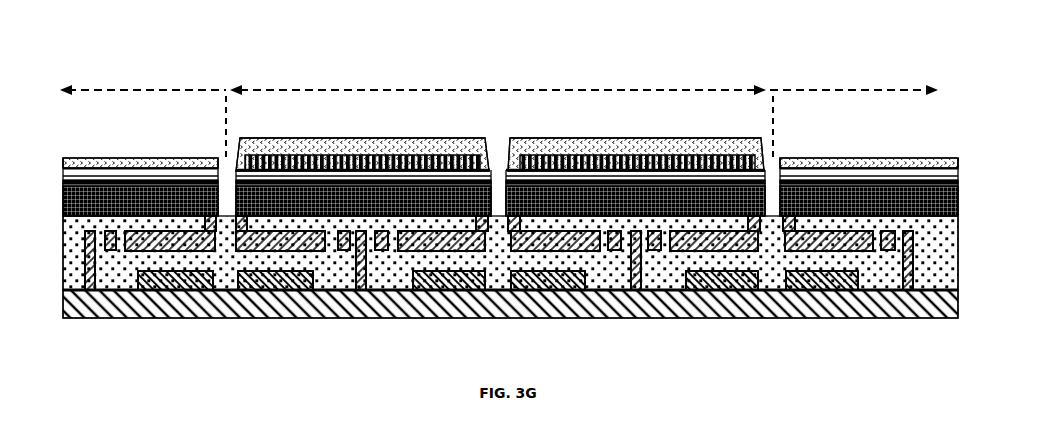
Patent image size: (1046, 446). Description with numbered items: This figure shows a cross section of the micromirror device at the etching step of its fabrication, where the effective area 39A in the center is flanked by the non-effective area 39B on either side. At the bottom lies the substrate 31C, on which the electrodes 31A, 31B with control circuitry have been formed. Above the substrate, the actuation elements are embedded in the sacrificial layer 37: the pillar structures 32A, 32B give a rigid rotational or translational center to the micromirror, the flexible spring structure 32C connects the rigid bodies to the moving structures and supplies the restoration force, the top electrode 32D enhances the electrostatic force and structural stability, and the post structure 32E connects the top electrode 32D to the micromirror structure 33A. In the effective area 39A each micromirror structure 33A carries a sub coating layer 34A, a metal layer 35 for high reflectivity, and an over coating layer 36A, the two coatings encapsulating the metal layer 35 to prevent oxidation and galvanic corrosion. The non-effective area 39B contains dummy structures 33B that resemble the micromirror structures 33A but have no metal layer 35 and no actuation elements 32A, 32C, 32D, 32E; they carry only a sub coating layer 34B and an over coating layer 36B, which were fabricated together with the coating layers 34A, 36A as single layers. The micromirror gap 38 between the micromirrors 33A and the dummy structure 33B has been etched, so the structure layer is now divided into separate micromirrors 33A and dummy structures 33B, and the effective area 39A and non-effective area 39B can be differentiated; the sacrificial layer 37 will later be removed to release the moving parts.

The electrode 31A is at (772, 302).
The electrode 31B is at (710, 270).
The substrate 31C is at (147, 275).
The pillar structure 32A is at (627, 275).
The pillar structure 32B is at (905, 273).
The flexible spring structure 32C is at (380, 245).
The top electrode 32D is at (450, 240).
The post structure 32E is at (243, 243).
The micromirror structure 33A is at (494, 186).
The dummy structure 33B is at (771, 180).
The sub coating layer 34A is at (233, 173).
The sub coating layer 34B is at (155, 168).
The metal layer 35 is at (567, 147).
The over coating layer 36A is at (358, 145).
The over coating layer 36B is at (843, 153).
The sacrificial layer 37 is at (670, 220).
The micromirror gap 38 is at (217, 190).
The effective area 39A is at (498, 79).
The non-effective area 39B is at (499, 110).